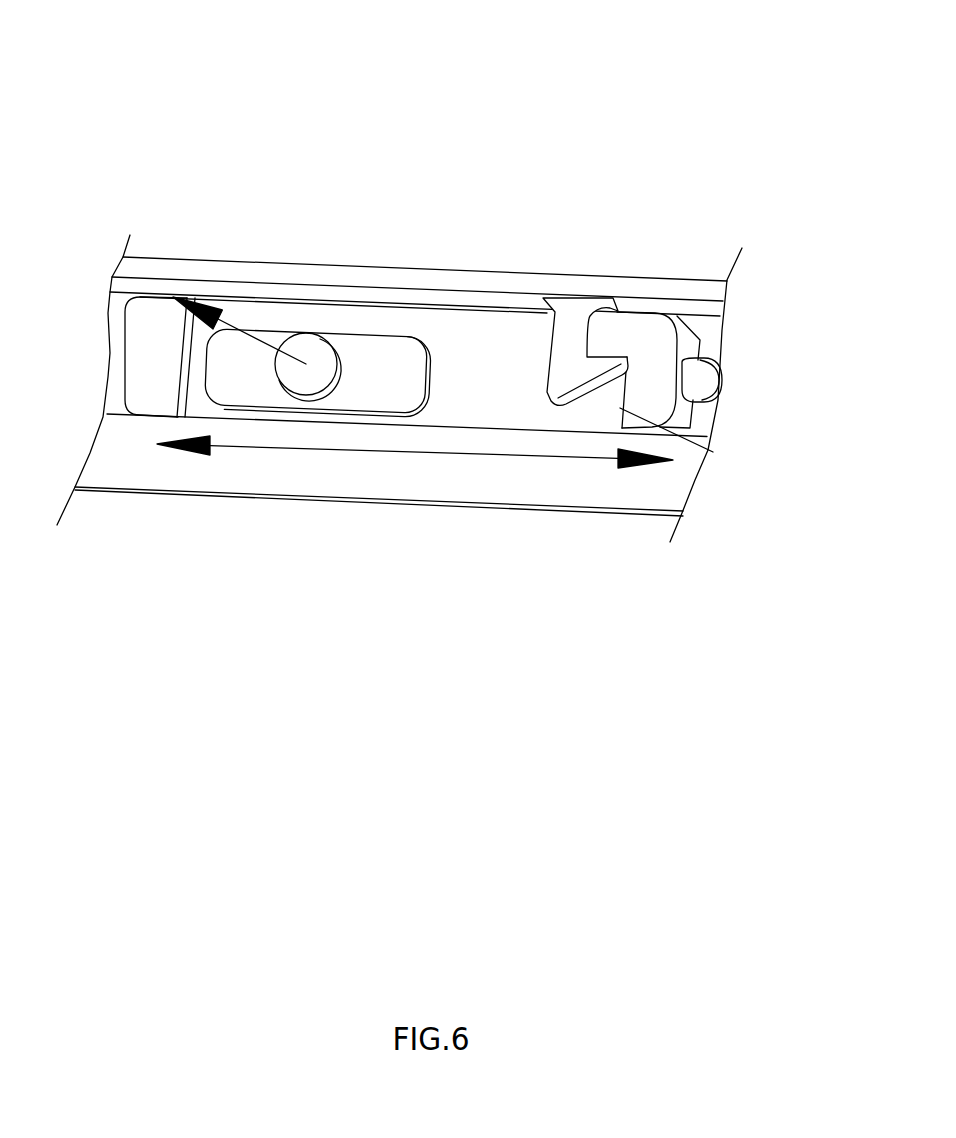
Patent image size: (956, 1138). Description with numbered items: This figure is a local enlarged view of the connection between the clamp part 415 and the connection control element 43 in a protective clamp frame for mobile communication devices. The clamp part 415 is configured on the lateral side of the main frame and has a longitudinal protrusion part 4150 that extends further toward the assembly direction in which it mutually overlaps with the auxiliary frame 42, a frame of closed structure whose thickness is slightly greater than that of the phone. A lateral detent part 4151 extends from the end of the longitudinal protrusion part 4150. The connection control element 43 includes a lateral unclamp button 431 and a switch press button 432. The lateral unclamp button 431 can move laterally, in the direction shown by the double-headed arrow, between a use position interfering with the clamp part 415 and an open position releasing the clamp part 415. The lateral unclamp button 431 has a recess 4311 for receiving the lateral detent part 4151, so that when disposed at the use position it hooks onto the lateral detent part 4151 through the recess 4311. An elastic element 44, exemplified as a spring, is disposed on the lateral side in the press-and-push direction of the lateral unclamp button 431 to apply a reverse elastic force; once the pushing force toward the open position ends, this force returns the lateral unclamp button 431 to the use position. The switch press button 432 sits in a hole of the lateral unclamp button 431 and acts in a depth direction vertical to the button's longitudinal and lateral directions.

The auxiliary frame 42 is at (480, 478).
The connection control element 43 is at (336, 212).
The lateral unclamp button 431 is at (466, 338).
The switch press button 432 is at (335, 338).
The clamp part 415 is at (607, 216).
The longitudinal protrusion part 4150 is at (567, 347).
The lateral detent part 4151 is at (608, 367).
The elastic element 44 is at (713, 392).
The recess 4311 is at (707, 453).